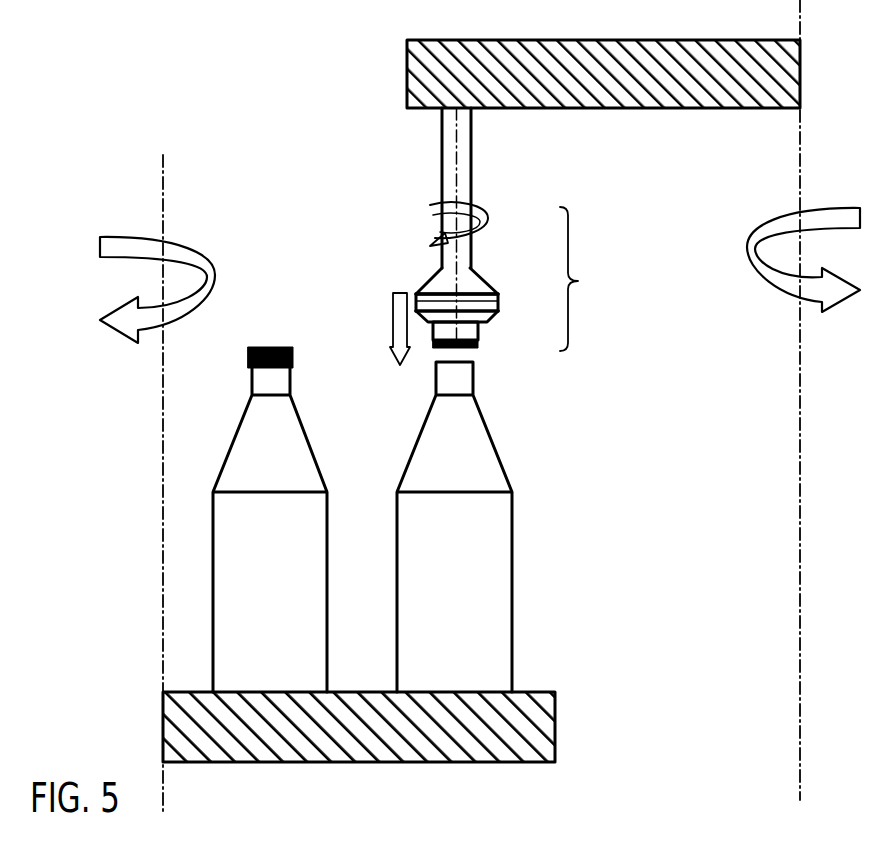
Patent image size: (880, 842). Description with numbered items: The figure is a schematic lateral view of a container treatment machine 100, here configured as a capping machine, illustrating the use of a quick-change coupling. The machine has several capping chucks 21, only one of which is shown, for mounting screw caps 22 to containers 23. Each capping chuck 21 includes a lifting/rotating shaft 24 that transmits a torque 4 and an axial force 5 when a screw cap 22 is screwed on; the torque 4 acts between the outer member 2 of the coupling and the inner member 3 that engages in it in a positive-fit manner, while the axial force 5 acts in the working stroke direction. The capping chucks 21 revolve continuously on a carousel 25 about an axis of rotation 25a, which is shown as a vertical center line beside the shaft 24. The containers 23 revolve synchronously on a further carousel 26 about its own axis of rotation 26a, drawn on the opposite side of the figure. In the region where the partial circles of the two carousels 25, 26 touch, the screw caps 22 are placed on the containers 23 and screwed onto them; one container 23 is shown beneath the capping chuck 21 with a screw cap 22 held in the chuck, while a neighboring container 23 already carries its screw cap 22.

The container treatment machine 100 is at (162, 88).
The outer member 2 is at (480, 276).
The inner member 3 is at (470, 332).
The torque 4 is at (480, 223).
The axial force 5 is at (392, 305).
The capping chuck 21 is at (585, 279).
The screw cap 22 is at (478, 343).
The container 23 is at (493, 643).
The lifting/rotating shaft 24 is at (471, 140).
The carousel 25 is at (673, 98).
The axis of rotation 25a is at (800, 373).
The further carousel 26 is at (555, 730).
The axis of rotation 26a is at (163, 182).